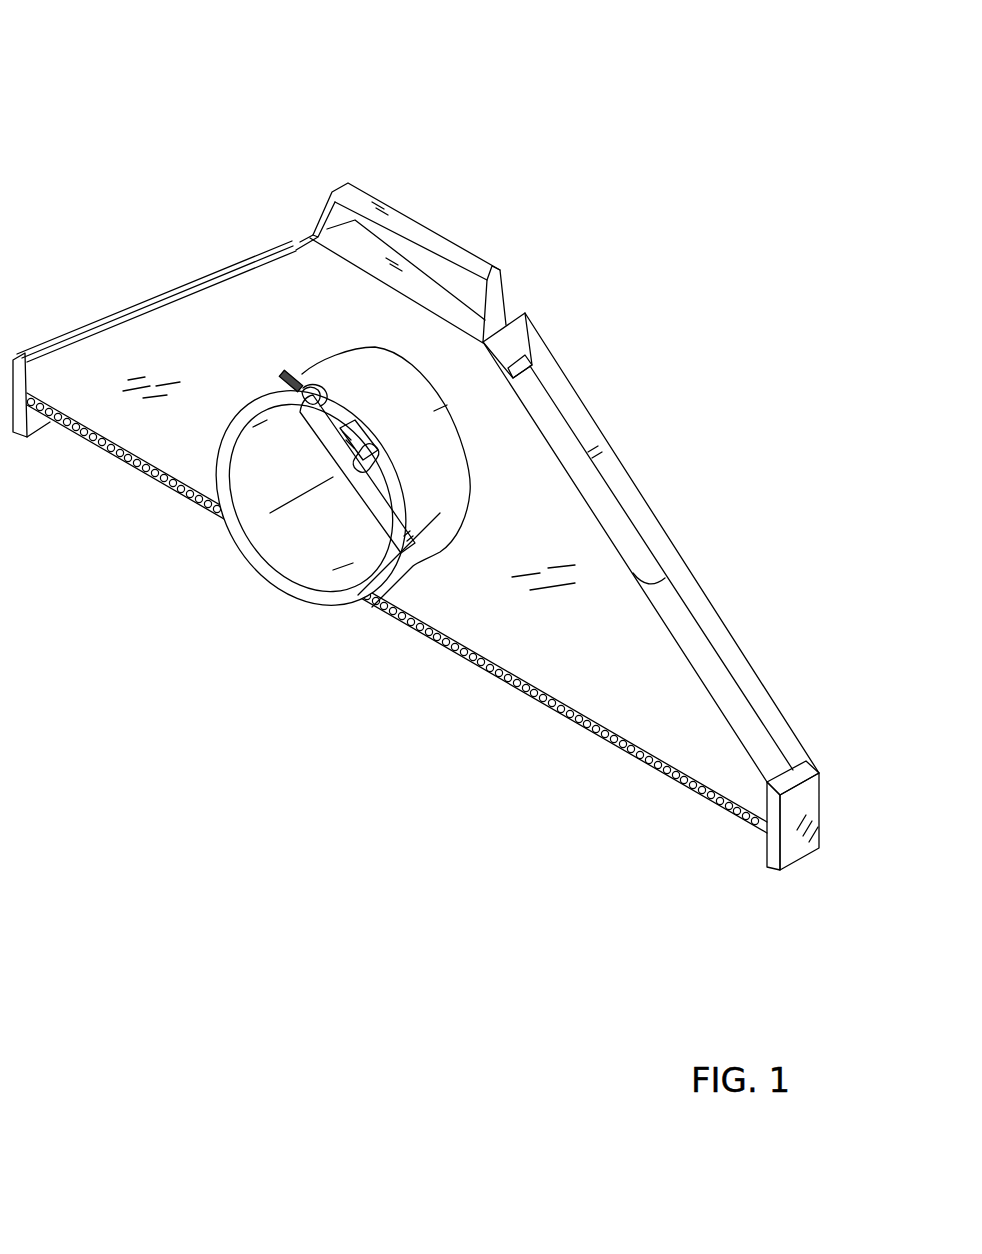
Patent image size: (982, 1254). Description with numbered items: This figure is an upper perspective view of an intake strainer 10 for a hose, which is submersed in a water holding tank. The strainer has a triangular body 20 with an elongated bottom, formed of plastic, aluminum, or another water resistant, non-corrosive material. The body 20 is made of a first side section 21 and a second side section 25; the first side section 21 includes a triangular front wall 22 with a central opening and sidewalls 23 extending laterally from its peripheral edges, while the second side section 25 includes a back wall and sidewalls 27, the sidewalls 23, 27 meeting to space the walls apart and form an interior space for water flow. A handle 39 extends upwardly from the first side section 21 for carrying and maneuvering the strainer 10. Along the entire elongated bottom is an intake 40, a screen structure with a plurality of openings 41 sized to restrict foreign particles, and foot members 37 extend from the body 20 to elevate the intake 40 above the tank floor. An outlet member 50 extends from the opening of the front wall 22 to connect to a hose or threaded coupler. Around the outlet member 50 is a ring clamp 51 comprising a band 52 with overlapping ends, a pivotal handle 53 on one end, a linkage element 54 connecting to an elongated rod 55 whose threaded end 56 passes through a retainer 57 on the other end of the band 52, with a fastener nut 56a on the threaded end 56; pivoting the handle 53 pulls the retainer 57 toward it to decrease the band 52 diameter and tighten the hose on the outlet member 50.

The intake strainer 10 is at (139, 102).
The body 20 is at (222, 258).
The first side section 21 is at (665, 578).
The front wall 22 is at (470, 578).
The sidewalls 23 is at (592, 485).
The second side section 25 is at (576, 397).
The sidewalls 27 is at (635, 500).
The foot members 37 is at (28, 438).
The handle 39 is at (403, 222).
The intake 40 is at (397, 616).
The openings 41 is at (633, 750).
The outlet member 50 is at (380, 362).
The ring clamp 51 is at (294, 519).
The band 52 is at (253, 396).
The pivotal handle 53 is at (386, 592).
The linkage element 54 is at (386, 460).
The elongated rod 55 is at (330, 410).
The threaded end 56 is at (288, 377).
The fastener nut 56a is at (303, 393).
The retainer 57 is at (306, 386).